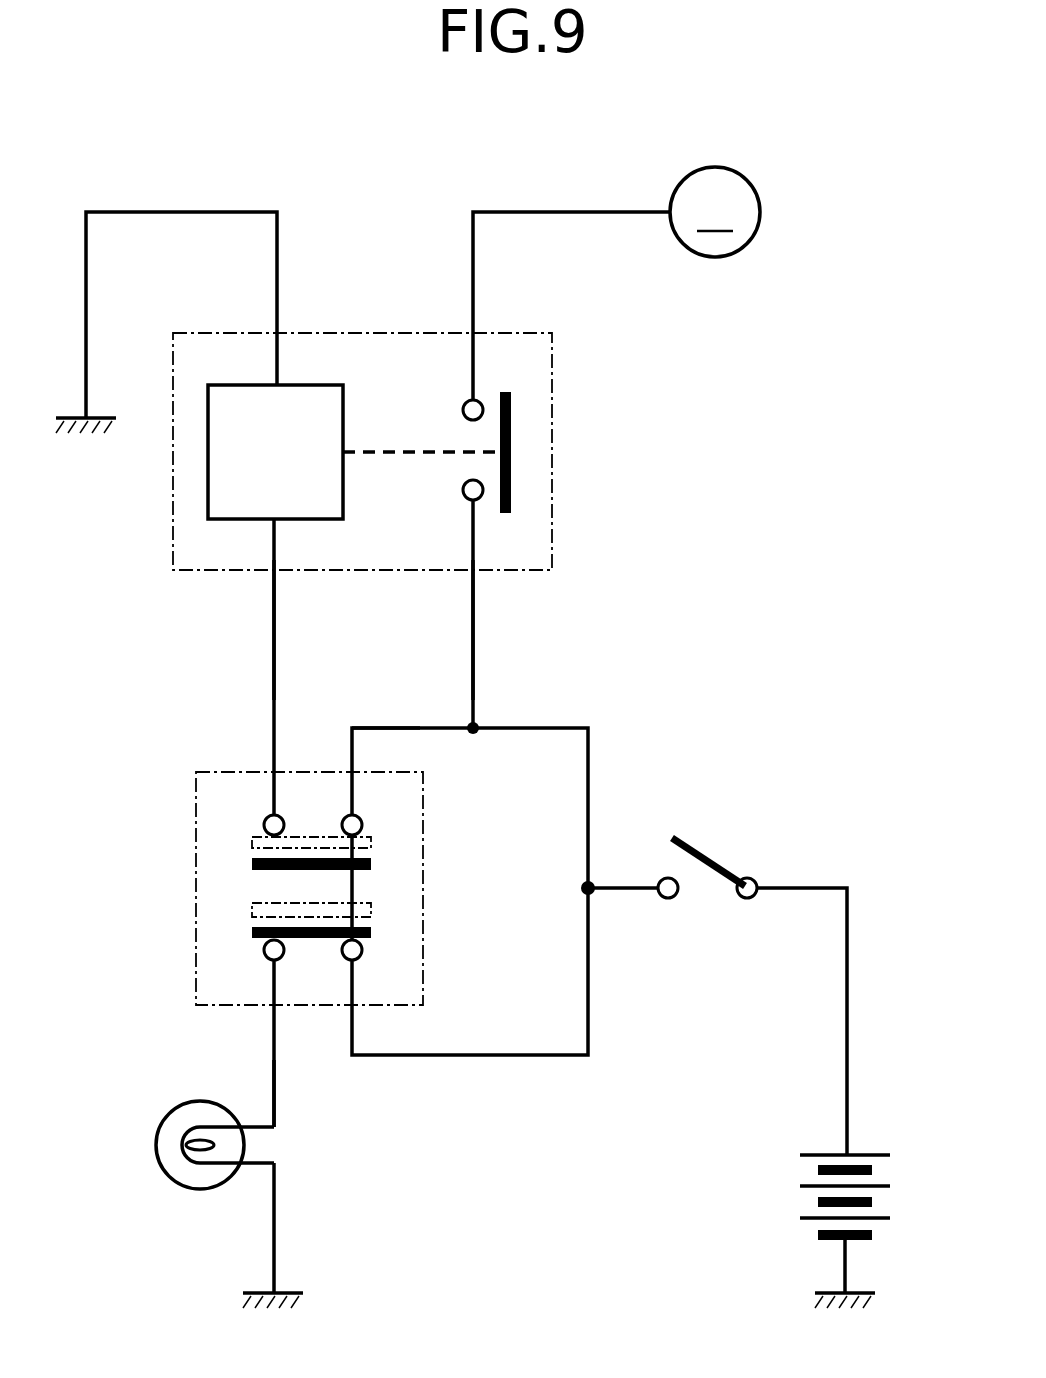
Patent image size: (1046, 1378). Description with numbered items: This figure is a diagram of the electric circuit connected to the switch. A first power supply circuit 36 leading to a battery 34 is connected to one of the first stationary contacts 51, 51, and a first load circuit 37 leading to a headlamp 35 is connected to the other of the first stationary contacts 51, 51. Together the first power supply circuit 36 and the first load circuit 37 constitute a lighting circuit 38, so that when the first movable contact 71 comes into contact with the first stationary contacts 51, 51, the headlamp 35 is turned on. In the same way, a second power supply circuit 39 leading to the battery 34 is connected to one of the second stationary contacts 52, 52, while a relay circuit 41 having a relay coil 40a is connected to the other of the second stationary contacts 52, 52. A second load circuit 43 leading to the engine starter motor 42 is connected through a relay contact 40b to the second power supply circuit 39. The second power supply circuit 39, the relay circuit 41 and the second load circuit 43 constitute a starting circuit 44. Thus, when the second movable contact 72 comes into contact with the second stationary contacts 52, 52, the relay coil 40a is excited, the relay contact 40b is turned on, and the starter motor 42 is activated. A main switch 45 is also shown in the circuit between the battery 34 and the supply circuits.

The battery 34 is at (807, 1169).
The headlamp 35 is at (158, 1163).
The first power supply circuit 36 is at (465, 1058).
The first load circuit 37 is at (276, 1100).
The lighting circuit 38 is at (357, 1198).
The second power supply circuit 39 is at (387, 728).
The relay coil 40a is at (310, 393).
The relay contact 40b is at (512, 420).
The relay circuit 41 is at (274, 695).
The engine starter motor 42 is at (616, 283).
The second load circuit 43 is at (472, 693).
The starting circuit 44 is at (463, 643).
The main switch 45 is at (688, 840).
The first stationary contacts 51 is at (361, 954).
The second stationary contacts 52 is at (265, 820).
The first movable contact 71 is at (371, 912).
The second movable contact 72 is at (371, 845).